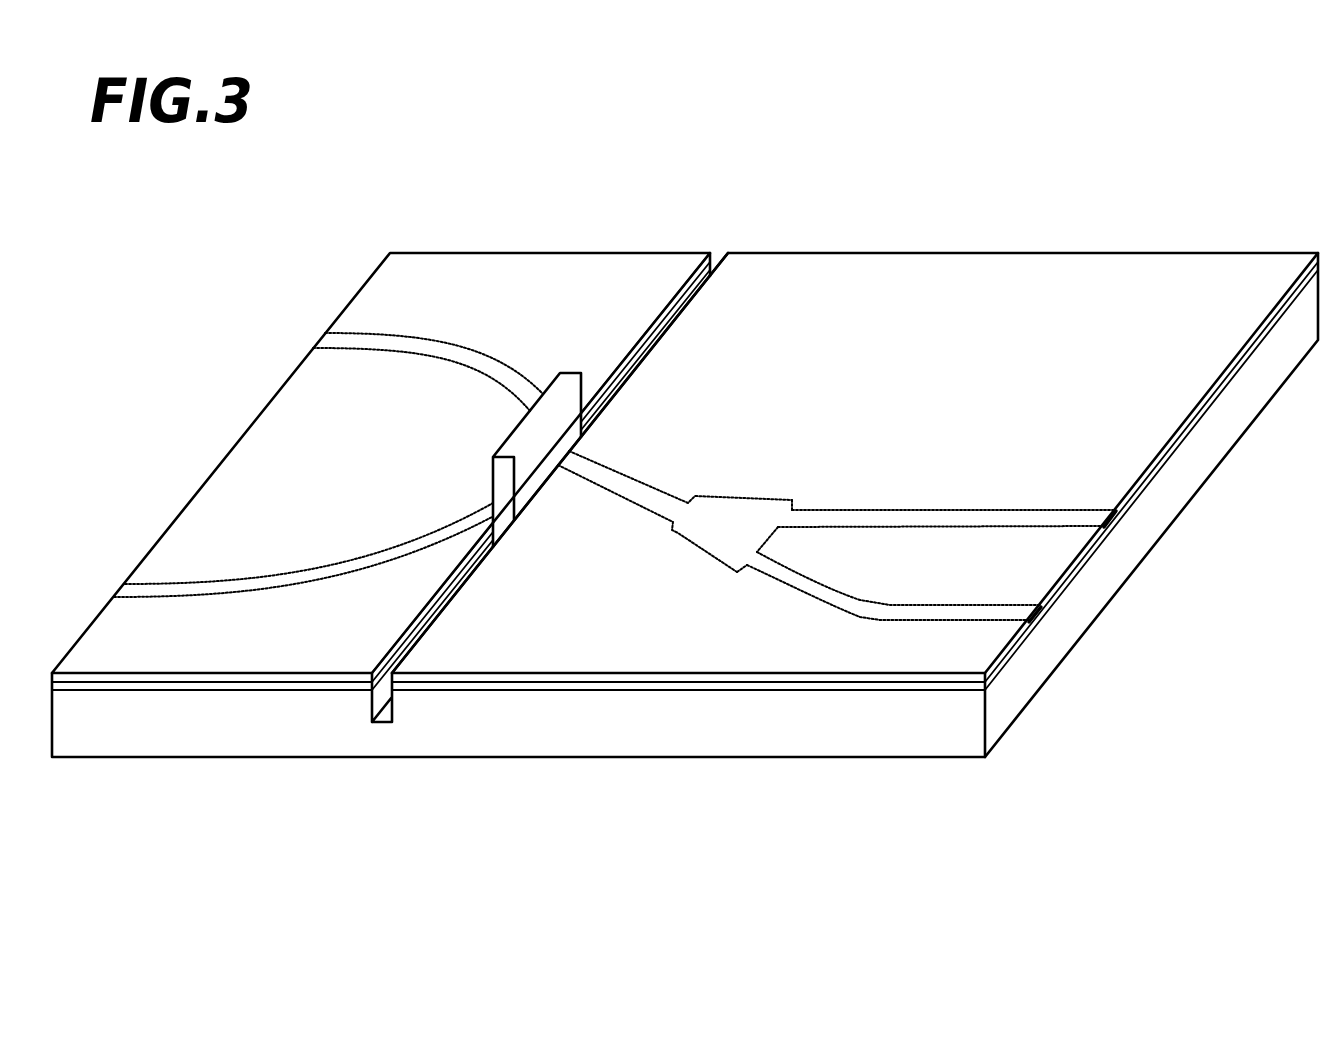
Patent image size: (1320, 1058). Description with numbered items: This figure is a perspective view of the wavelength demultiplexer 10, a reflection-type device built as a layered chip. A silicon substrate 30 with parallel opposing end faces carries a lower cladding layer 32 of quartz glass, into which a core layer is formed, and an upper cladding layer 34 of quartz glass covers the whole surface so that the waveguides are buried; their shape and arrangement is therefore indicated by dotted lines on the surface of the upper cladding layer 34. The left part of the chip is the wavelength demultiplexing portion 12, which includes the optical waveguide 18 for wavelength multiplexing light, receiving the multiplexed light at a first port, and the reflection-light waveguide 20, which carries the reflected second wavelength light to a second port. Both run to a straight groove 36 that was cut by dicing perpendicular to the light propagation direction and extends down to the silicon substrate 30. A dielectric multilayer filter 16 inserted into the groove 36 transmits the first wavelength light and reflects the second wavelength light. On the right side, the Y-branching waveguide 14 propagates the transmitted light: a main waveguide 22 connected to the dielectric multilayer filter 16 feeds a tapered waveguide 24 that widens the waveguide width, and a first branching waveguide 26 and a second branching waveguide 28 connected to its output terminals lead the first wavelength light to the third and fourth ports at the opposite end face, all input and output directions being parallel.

The wavelength demultiplexer 10 is at (987, 127).
The wavelength demultiplexing portion 12 is at (587, 184).
The Y-branching waveguide 14 is at (1102, 187).
The dielectric multilayer filter 16 is at (570, 372).
The optical waveguide for wavelength multiplexing light 18 is at (381, 333).
The reflection-light waveguide 20 is at (388, 549).
The main waveguide 22 is at (633, 477).
The tapered waveguide 24 is at (708, 508).
The first branching waveguide 26 is at (820, 510).
The second branching waveguide 28 is at (952, 605).
The silicon substrate 30 is at (812, 728).
The lower cladding layer 32 is at (752, 688).
The upper cladding layer 34 is at (693, 675).
The groove 36 is at (378, 722).